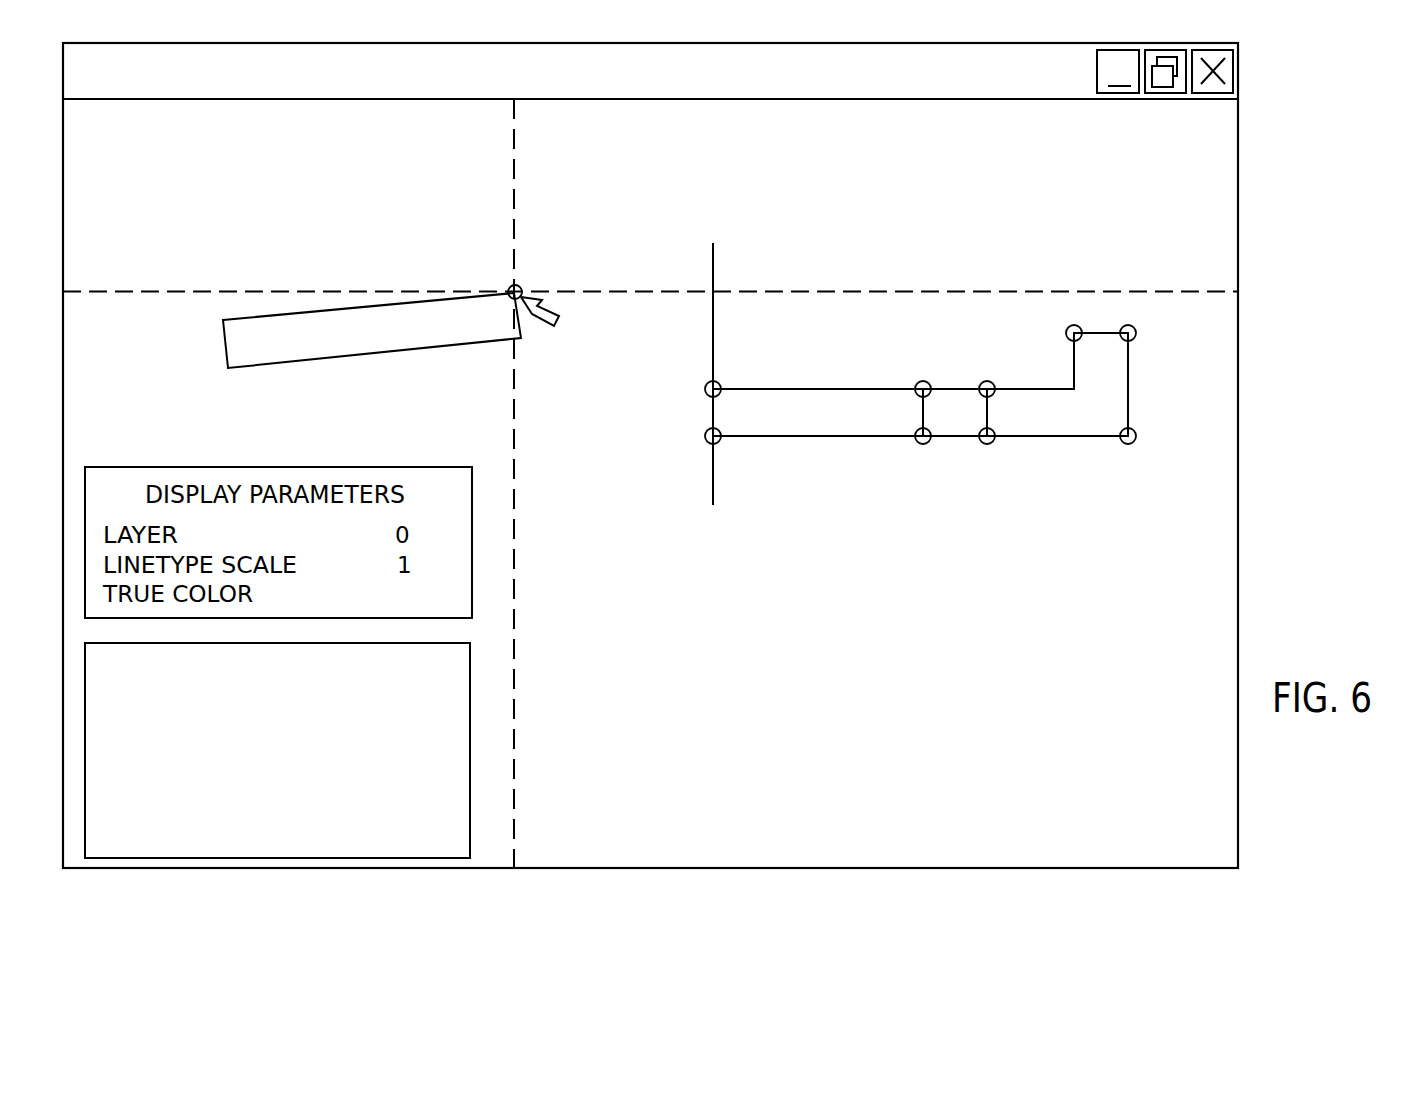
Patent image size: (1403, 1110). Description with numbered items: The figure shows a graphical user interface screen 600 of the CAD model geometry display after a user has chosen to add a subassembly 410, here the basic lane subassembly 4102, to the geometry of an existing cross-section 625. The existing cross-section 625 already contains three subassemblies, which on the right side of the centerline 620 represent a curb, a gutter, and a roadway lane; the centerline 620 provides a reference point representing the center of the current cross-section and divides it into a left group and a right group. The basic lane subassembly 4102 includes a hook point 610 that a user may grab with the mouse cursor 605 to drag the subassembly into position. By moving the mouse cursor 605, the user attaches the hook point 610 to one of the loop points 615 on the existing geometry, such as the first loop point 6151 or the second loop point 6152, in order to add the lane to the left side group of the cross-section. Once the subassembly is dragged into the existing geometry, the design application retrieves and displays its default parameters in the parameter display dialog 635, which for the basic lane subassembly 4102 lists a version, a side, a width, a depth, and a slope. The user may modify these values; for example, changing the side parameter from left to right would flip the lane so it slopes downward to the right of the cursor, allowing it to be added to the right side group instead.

The screen 600 is at (1238, 125).
The mouse cursor 605 is at (543, 324).
The hook point 610 is at (510, 286).
The loop points 615 is at (667, 421).
The loop point 6151 is at (705, 389).
The loop point 6152 is at (705, 436).
The centerline 620 is at (713, 262).
The existing cross-section 625 is at (867, 388).
The parameter display dialog 635 is at (472, 688).
The subassembly 410 is at (372, 356).
The basic lane subassembly 4102 is at (362, 355).